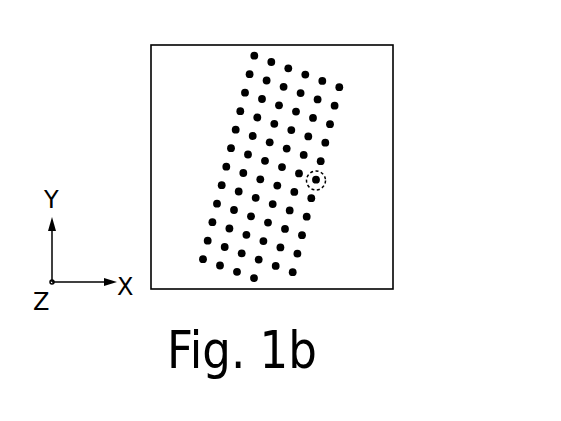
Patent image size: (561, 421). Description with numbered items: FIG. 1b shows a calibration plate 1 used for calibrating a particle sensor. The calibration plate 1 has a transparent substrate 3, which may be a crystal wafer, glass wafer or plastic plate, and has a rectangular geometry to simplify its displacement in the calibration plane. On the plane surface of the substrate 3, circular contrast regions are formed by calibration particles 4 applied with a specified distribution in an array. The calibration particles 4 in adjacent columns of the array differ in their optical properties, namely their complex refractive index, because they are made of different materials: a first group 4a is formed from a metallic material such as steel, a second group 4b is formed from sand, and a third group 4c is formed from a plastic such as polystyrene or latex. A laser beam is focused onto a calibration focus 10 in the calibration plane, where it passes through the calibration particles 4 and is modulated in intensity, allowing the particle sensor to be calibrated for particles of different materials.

The calibration plate 1 is at (113, 60).
The transparent substrate 3 is at (177, 145).
The calibration particles 4 is at (234, 60).
The first group of calibration particles 4a is at (344, 86).
The second group of calibration particles 4b is at (326, 79).
The third group of calibration particles 4c is at (306, 72).
The calibration focus 10 is at (328, 180).